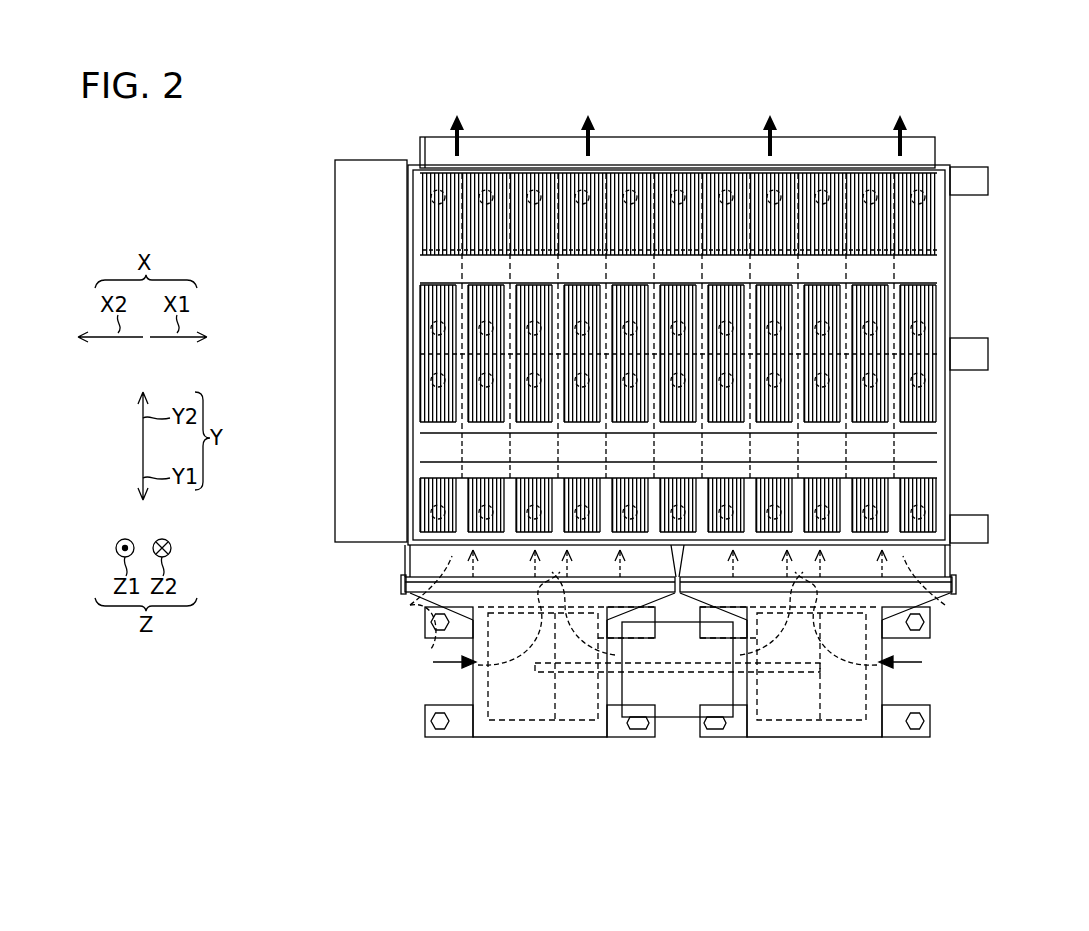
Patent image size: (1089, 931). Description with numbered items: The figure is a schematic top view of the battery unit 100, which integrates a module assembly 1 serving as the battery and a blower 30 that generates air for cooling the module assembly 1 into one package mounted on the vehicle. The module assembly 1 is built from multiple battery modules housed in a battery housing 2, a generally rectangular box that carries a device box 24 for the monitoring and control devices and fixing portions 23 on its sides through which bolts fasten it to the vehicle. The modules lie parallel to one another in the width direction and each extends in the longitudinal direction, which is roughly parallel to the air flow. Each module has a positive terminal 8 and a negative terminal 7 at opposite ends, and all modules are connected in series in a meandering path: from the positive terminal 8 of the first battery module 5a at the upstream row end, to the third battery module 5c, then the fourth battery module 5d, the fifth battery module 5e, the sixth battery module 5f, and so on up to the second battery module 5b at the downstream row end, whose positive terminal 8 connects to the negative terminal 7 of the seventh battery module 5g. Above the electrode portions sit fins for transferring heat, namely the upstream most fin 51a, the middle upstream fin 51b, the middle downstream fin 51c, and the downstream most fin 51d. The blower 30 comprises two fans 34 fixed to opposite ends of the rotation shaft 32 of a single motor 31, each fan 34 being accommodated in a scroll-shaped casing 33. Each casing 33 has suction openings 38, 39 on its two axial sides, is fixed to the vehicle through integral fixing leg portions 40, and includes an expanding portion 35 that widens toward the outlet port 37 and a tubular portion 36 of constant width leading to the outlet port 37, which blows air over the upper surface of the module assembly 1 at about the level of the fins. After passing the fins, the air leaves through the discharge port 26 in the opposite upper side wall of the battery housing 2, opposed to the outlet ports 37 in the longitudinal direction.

The battery unit 100 is at (967, 102).
The module assembly 1 is at (979, 293).
The battery housing 2 is at (948, 415).
The first battery module 5a is at (480, 468).
The second battery module 5b is at (928, 247).
The third battery module 5c is at (428, 237).
The fourth battery module 5d is at (478, 271).
The fifth battery module 5e is at (430, 470).
The sixth battery module 5f is at (530, 470).
The seventh battery module 5g is at (928, 448).
The negative terminal 7 is at (438, 172).
The positive terminal 8 is at (496, 172).
The fixing portion 23 is at (985, 527).
The device box 24 is at (335, 462).
The discharge port 26 is at (815, 137).
The blower 30 is at (970, 655).
The motor 31 is at (683, 718).
The rotation shaft 32 is at (572, 675).
The casing 33 is at (555, 722).
The fan 34 is at (513, 722).
The expanding portion 35 is at (410, 607).
The tubular portion 36 is at (405, 548).
The outlet port 37 is at (410, 605).
The suction opening 38 is at (473, 690).
The suction opening 39 is at (615, 740).
The fixing leg portion 40 is at (452, 735).
The upstream most fin 51a is at (430, 492).
The middle upstream fin 51b is at (428, 398).
The middle downstream fin 51c is at (428, 297).
The downstream most fin 51d is at (435, 197).